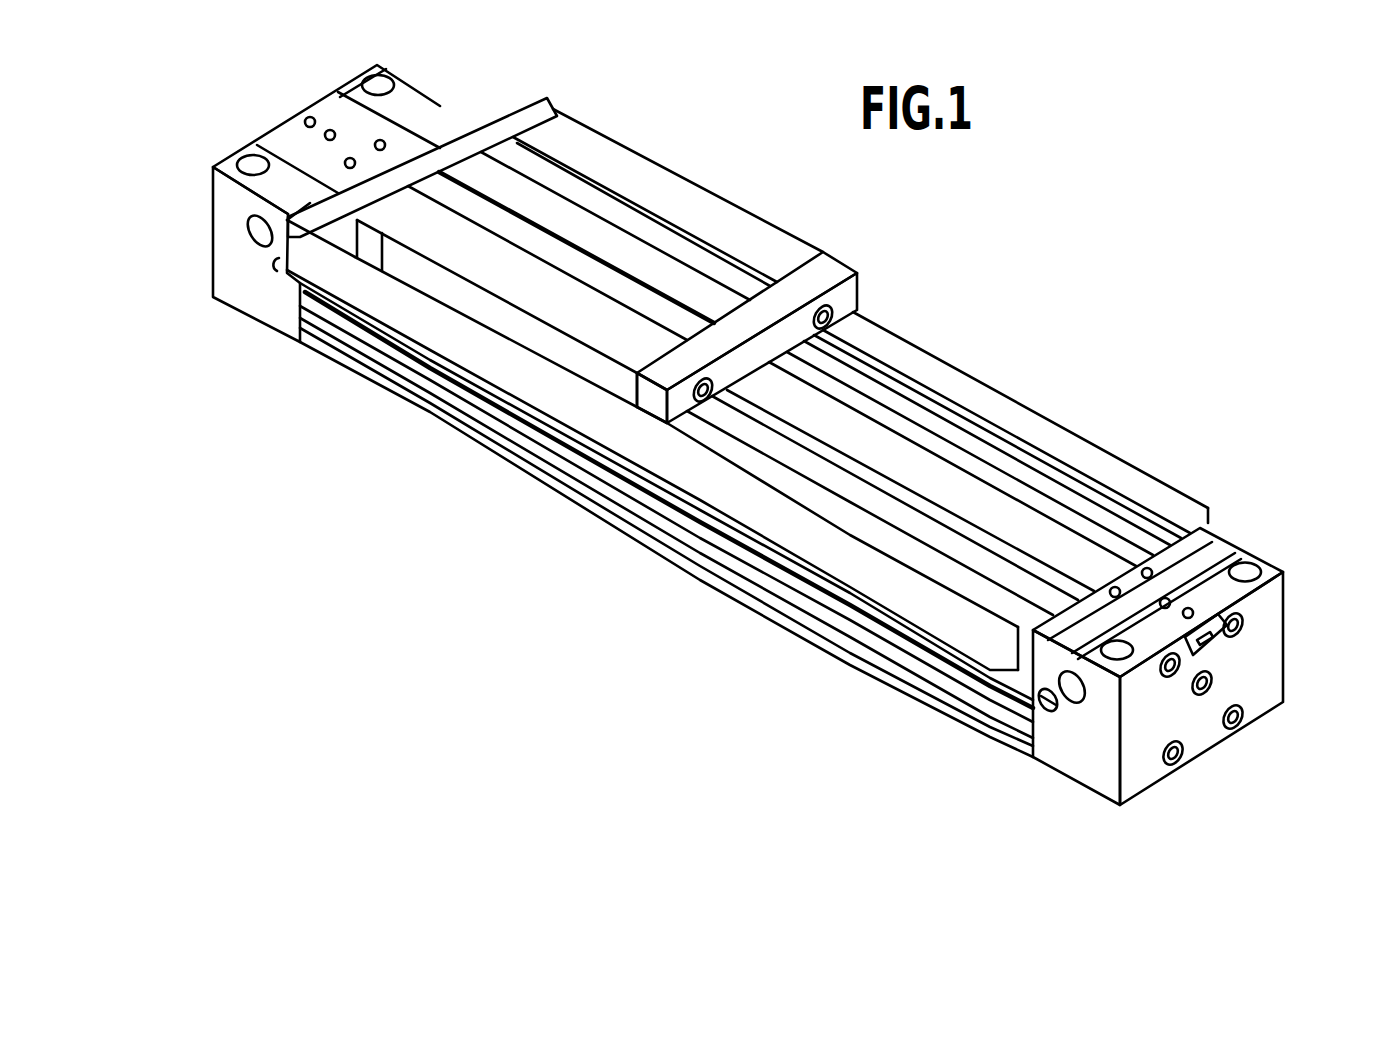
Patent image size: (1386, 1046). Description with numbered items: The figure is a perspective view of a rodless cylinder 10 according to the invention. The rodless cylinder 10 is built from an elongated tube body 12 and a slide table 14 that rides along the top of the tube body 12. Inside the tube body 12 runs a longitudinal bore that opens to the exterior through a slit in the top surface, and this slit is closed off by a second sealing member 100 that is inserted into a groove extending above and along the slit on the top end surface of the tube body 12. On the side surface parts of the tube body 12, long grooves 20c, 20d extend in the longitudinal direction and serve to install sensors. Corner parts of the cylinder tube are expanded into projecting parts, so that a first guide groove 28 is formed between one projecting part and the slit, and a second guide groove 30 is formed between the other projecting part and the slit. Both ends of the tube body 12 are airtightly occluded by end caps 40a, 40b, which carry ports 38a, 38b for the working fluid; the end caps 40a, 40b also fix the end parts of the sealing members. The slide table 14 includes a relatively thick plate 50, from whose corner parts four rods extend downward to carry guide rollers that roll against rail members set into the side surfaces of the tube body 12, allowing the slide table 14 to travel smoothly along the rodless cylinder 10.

The rodless cylinder 10 is at (878, 228).
The tube body 12 is at (587, 502).
The slide table 14 is at (663, 160).
The long groove 20c is at (1000, 723).
The long groove 20d is at (920, 648).
The first guide groove 28 is at (1068, 498).
The second guide groove 30 is at (823, 475).
The port 38a is at (1068, 690).
The port 38b is at (258, 240).
The end cap 40a is at (1267, 598).
The end cap 40b is at (423, 107).
The plate 50 is at (698, 200).
The second sealing member 100 is at (965, 487).